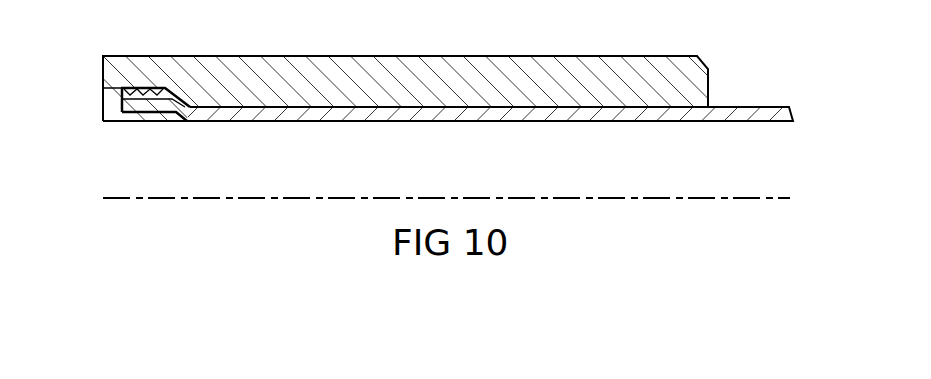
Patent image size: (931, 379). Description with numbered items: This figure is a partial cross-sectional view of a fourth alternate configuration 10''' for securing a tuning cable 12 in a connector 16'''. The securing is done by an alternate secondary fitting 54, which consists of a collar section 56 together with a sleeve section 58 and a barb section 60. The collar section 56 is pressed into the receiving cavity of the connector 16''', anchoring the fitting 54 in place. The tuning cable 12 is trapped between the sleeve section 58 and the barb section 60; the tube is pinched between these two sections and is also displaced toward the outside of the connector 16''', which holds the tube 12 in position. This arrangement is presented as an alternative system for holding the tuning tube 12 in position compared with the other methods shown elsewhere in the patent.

The panel assembly 10''' is at (430, 103).
The tuning cable 12 is at (753, 112).
The connector 16''' is at (428, 75).
The alternate secondary fitting 54 is at (136, 96).
The collar section 56 is at (112, 100).
The sleeve section 58 is at (165, 116).
The barb section 60 is at (136, 88).